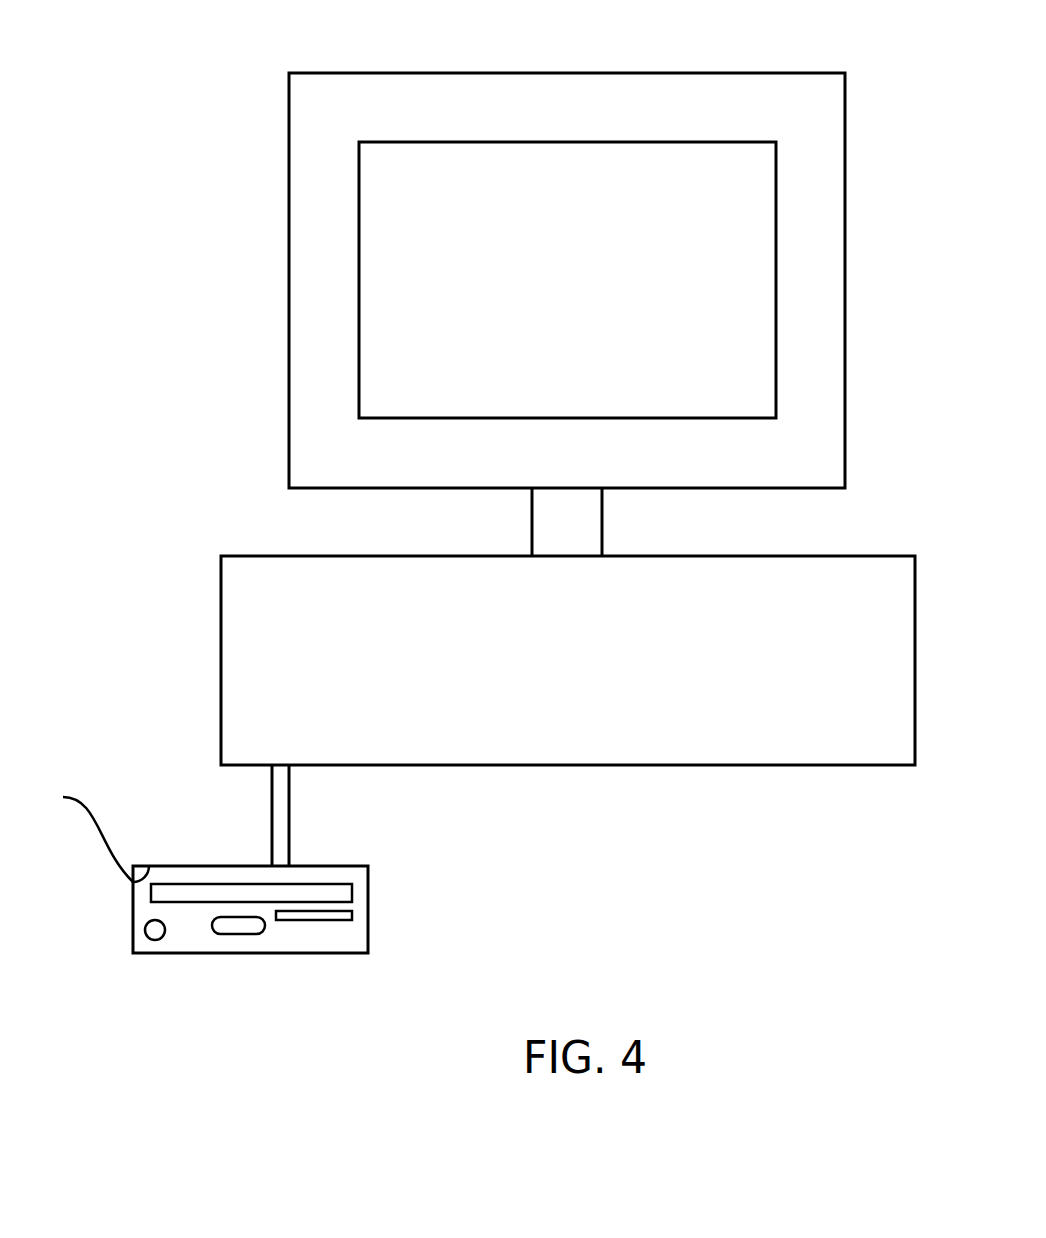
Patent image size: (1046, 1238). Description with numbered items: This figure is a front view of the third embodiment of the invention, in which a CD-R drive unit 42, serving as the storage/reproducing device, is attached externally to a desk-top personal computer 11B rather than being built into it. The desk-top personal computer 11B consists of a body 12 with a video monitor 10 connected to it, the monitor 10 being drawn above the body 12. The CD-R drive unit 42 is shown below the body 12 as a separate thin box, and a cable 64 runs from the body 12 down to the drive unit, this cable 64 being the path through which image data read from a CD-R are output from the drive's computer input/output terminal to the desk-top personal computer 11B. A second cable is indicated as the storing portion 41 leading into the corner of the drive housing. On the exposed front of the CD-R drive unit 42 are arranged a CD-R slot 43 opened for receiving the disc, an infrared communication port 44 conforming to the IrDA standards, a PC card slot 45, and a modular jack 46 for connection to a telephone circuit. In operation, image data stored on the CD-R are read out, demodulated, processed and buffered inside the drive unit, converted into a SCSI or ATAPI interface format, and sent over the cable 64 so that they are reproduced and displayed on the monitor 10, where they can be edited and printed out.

The video monitor 10 is at (806, 117).
The desk-top personal computer 11B is at (341, 73).
The body 12 is at (850, 665).
The cable 64 is at (290, 813).
The storing portion 41 is at (89, 834).
The CD-R drive unit 42 is at (118, 923).
The CD-R slot 43 is at (185, 892).
The infrared communication port 44 is at (237, 934).
The PC card slot 45 is at (325, 920).
The modular jack 46 is at (152, 940).